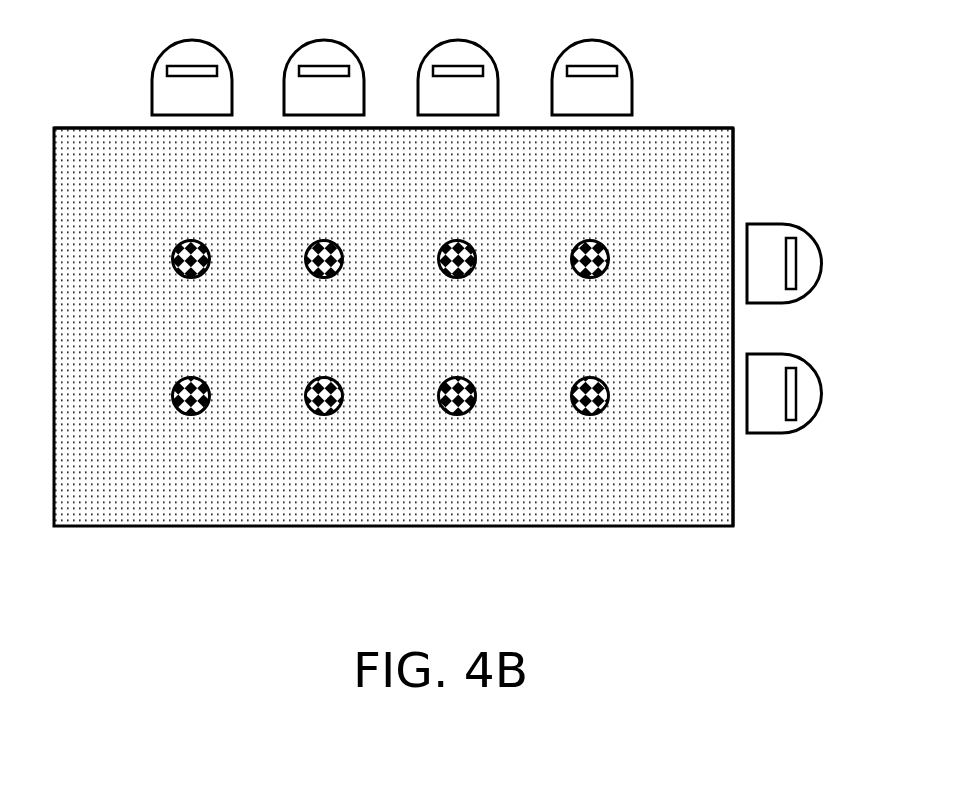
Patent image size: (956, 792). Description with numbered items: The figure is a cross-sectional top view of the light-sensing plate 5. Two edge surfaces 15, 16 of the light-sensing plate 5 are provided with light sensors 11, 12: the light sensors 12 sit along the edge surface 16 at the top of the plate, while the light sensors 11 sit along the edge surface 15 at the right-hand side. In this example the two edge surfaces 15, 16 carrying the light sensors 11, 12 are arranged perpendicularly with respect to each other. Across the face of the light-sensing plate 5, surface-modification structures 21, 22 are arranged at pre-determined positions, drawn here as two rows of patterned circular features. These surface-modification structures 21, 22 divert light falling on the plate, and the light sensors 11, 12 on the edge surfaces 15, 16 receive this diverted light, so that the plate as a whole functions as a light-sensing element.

The light-sensing plate 5 is at (177, 510).
The light sensor 11 is at (797, 263).
The light sensor 12 is at (590, 66).
The edge surface 15 is at (731, 178).
The edge surface 16 is at (115, 129).
The surface-modification structure 21 is at (190, 240).
The surface-modification structure 22 is at (588, 415).